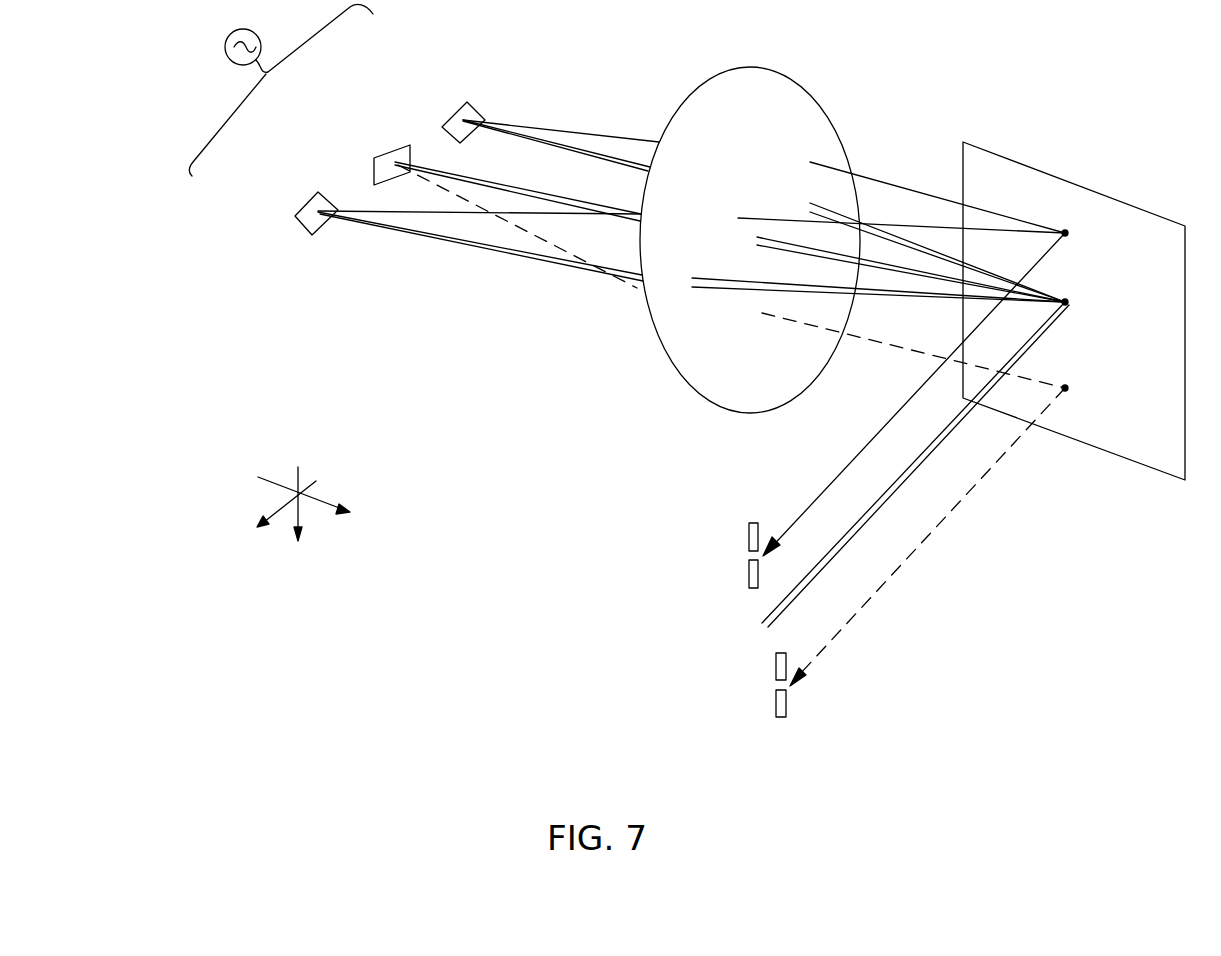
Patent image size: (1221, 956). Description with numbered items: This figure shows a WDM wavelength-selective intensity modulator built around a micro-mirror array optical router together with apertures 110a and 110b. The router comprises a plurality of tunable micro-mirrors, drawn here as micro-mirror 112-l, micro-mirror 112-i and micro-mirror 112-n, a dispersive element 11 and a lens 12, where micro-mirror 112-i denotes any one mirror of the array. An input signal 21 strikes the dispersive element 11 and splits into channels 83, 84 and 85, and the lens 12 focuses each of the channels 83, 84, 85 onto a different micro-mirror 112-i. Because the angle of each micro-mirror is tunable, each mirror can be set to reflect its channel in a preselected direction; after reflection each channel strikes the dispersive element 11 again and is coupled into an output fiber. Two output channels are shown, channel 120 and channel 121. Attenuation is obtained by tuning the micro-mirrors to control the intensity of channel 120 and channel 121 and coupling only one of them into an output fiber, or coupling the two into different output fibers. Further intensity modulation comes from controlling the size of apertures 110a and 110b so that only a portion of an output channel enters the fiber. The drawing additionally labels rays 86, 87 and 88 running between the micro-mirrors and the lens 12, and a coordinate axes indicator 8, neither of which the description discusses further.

The tunable micro-mirror 112-n is at (448, 120).
The micro-mirror 112-i is at (384, 158).
The tunable micro-mirror 112-l is at (302, 210).
The light beam from source n 88 is at (578, 142).
The light beam from source i 87 is at (517, 233).
The light beam from source l 86 is at (413, 214).
The lens 12 is at (788, 93).
The dispersive element 11 is at (1158, 228).
The channel 85 is at (872, 238).
The channel 84 is at (797, 256).
The channel 83 is at (881, 297).
The output channel 120 is at (827, 490).
The output channel 121 is at (907, 555).
The input signal 21 is at (755, 634).
The aperture 110a is at (746, 535).
The aperture 110b is at (788, 703).
The coordinate axes 8 is at (225, 457).